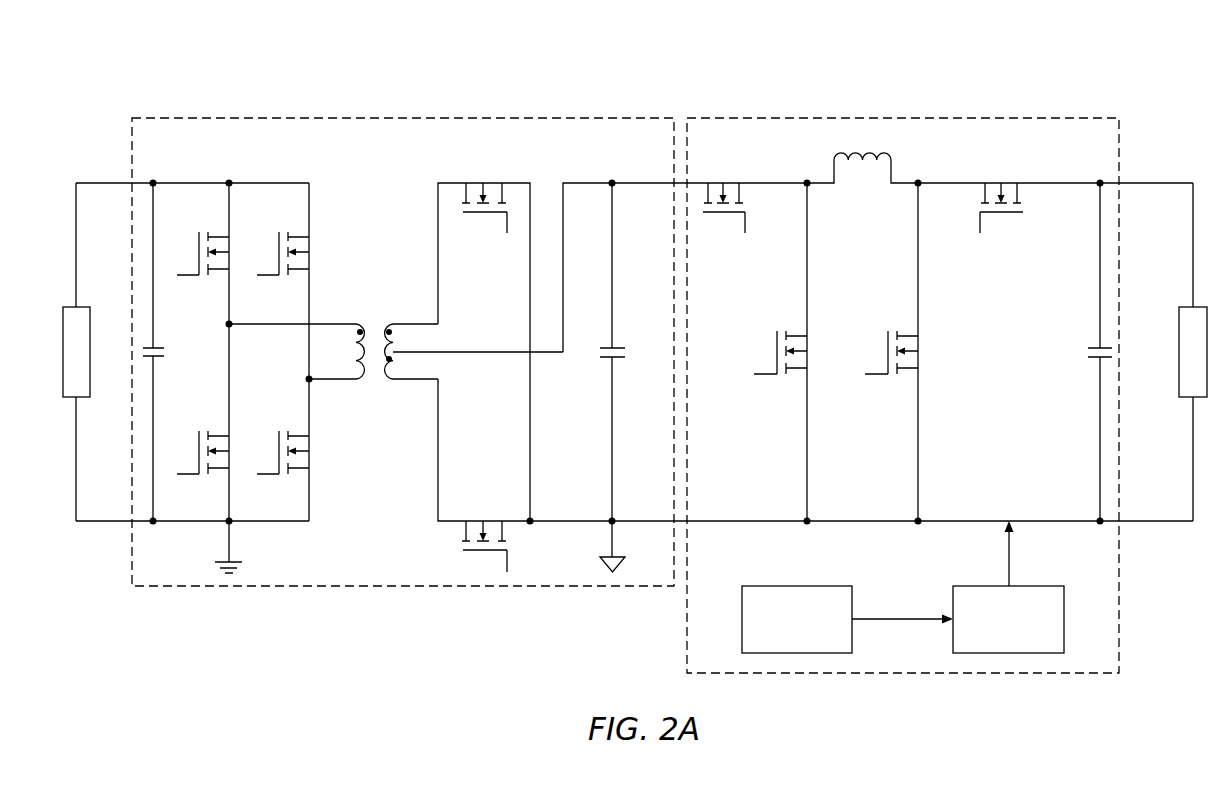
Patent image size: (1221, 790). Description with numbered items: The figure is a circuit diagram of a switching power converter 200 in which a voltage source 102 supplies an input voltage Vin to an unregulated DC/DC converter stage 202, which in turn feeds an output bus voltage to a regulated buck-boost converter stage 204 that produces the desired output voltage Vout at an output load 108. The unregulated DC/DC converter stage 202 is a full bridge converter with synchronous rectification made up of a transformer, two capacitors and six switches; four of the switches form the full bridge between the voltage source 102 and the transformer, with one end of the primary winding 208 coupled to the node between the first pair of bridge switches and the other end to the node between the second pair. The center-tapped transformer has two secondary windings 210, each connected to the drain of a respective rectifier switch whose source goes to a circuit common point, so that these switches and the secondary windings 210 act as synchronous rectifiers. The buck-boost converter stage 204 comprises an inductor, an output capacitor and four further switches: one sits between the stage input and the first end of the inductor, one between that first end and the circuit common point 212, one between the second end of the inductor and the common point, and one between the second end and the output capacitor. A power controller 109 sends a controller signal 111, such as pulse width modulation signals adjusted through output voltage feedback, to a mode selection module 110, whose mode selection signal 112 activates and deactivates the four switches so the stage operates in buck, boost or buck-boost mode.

The switching power converter 200 is at (148, 66).
The unregulated DC/DC converter stage 202 is at (581, 100).
The buck-boost converter stage 204 is at (1059, 100).
The voltage source 102 is at (92, 326).
The output load 108 is at (1178, 326).
The primary winding 208 is at (333, 323).
The secondary windings 210 is at (410, 323).
The circuit common point 212 is at (710, 521).
The power controller 109 is at (797, 586).
The mode selection module 110 is at (1025, 586).
The controller signal 111 is at (885, 619).
The mode selection signal 112 is at (1007, 557).